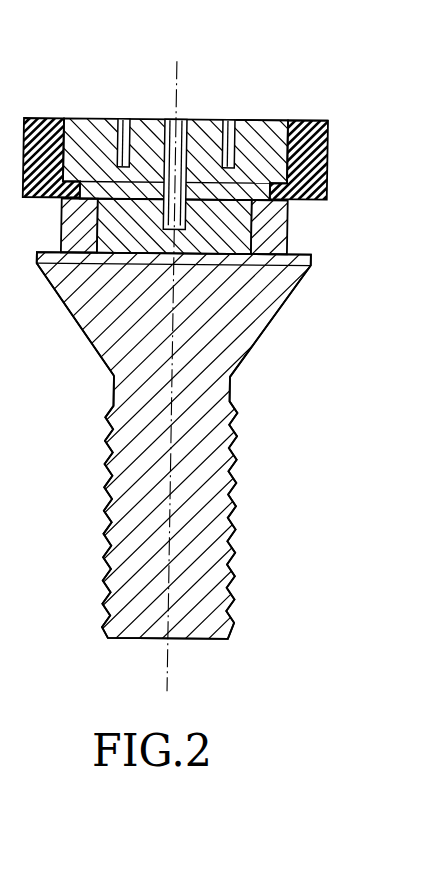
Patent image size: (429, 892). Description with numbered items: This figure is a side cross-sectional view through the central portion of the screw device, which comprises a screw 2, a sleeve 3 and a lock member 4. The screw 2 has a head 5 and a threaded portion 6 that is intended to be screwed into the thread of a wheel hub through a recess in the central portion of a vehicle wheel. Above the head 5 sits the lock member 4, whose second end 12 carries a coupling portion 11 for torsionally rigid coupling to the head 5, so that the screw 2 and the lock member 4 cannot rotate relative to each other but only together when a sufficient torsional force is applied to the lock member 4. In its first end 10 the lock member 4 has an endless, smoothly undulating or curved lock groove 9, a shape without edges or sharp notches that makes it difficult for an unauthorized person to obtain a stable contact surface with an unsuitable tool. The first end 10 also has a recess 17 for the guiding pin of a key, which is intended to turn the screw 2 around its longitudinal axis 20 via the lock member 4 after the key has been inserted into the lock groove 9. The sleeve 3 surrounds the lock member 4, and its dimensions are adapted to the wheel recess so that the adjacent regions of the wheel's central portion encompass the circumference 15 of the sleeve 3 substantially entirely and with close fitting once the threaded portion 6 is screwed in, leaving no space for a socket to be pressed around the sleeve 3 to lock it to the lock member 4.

The screw 2 is at (262, 393).
The sleeve 3 is at (333, 147).
The lock member 4 is at (84, 114).
The head 5 is at (291, 213).
The threaded portion 6 is at (230, 521).
The lock groove 9 is at (123, 119).
The first end 10 is at (260, 119).
The coupling portion 11 is at (222, 231).
The second end 12 is at (240, 264).
The circumference 15 is at (319, 120).
The recess 17 is at (183, 119).
The longitudinal axis 20 is at (168, 670).